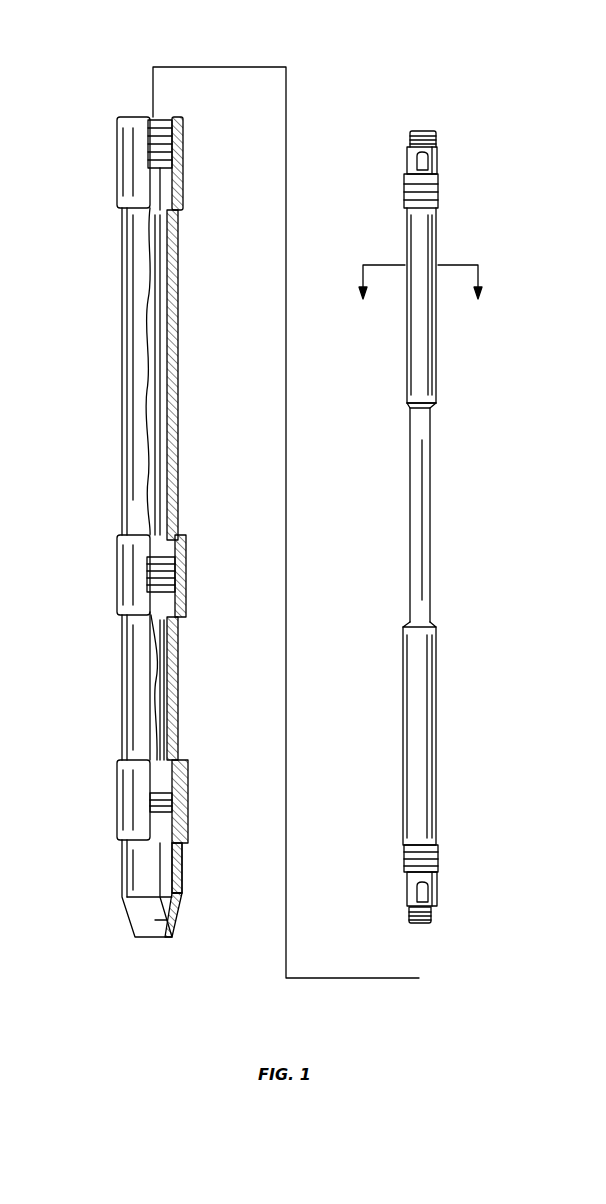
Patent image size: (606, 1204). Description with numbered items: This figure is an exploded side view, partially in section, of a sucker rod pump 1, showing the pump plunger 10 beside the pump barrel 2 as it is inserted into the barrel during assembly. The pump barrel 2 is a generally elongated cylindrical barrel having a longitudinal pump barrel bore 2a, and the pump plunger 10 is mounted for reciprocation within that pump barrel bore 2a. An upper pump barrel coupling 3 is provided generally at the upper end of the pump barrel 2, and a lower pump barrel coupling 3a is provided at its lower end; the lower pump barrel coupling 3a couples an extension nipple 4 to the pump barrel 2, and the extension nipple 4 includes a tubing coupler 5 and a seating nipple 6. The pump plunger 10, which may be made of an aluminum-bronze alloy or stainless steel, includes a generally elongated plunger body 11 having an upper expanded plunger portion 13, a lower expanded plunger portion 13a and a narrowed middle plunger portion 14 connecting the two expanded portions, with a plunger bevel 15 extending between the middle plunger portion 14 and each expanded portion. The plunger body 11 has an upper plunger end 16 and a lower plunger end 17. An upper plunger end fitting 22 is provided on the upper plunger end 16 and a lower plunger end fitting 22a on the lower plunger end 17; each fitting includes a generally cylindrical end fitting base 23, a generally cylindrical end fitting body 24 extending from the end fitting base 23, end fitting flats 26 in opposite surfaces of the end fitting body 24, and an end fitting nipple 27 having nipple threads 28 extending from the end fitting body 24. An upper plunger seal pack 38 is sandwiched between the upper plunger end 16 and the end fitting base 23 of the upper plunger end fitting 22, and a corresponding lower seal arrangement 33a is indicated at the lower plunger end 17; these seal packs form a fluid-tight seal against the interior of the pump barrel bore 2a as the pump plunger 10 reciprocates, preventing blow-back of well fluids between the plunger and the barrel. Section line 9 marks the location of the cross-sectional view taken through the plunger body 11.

The sucker rod pump 1 is at (386, 44).
The pump barrel 2 is at (190, 294).
The pump barrel bore 2a is at (162, 384).
The upper pump barrel coupling 3 is at (183, 165).
The lower pump barrel coupling 3a is at (188, 820).
The extension nipple 4 is at (192, 917).
The tubing coupler 5 is at (135, 800).
The seating nipple 6 is at (146, 869).
The section line 9- 9 is at (418, 280).
The pump plunger 10 is at (537, 228).
The plunger body 11 is at (447, 368).
The upper expanded plunger portion 13 is at (422, 383).
The lower expanded plunger portion 13a is at (425, 667).
The middle plunger portion 14 is at (423, 485).
The plunger bevel 15 is at (428, 408).
The upper plunger end 16 is at (430, 195).
The lower plunger end 17 is at (425, 852).
The upper plunger end fitting 22 is at (392, 160).
The lower plunger end fitting 22a is at (472, 905).
The end fitting base 23 is at (432, 177).
The end fitting body 24 is at (405, 170).
The end fitting flats 26 is at (423, 160).
The end fitting nipple 27 is at (432, 131).
The nipple threads 28 is at (412, 140).
The lower end assembly 33a is at (392, 852).
The upper plunger seal pack 38 is at (394, 206).